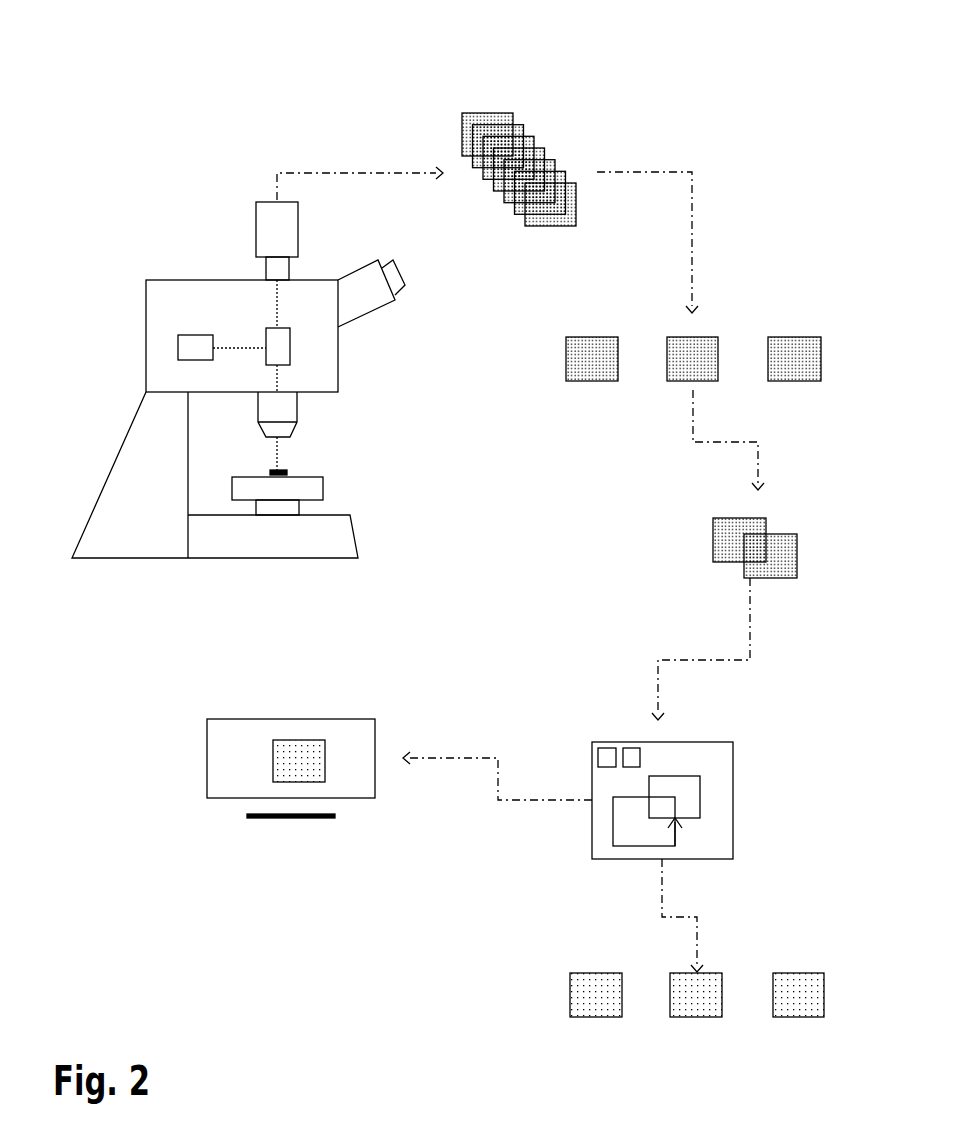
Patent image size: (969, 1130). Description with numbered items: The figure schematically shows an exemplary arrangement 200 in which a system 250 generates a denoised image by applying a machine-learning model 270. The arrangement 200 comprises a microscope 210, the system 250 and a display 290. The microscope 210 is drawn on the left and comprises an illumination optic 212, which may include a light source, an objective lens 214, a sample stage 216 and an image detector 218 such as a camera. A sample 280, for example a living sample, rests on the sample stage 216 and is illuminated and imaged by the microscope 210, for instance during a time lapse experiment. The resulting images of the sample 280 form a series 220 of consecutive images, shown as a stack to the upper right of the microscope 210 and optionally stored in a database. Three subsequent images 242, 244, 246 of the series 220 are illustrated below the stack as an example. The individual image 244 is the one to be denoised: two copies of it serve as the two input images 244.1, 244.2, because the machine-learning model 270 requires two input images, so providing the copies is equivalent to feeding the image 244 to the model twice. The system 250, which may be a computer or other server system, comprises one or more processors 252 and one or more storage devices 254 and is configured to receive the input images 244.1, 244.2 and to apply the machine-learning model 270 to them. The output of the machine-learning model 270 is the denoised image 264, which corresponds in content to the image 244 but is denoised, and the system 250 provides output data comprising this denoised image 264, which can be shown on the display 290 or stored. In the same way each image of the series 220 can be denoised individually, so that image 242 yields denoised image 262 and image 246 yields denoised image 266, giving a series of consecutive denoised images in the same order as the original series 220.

The arrangement 200 is at (270, 94).
The microscope 210 is at (163, 246).
The illumination optic 212 is at (178, 347).
The objective lens 214 is at (297, 421).
The sample stage 216 is at (323, 487).
The image detector 218 is at (300, 230).
The series of consecutive images 220 is at (564, 100).
The image 242 is at (580, 382).
The individual image 244 is at (675, 336).
The first input image 244.1 is at (713, 538).
The second input image 244.2 is at (775, 528).
The image 246 is at (793, 336).
The system 250 is at (592, 847).
The processor 252 is at (597, 753).
The storage device 254 is at (628, 745).
The denoised image 262 is at (570, 992).
The denoised image 264 is at (710, 973).
The denoised image 266 is at (800, 973).
The machine-learning model 270 is at (700, 802).
The sample 280 is at (287, 472).
The display 290 is at (230, 800).